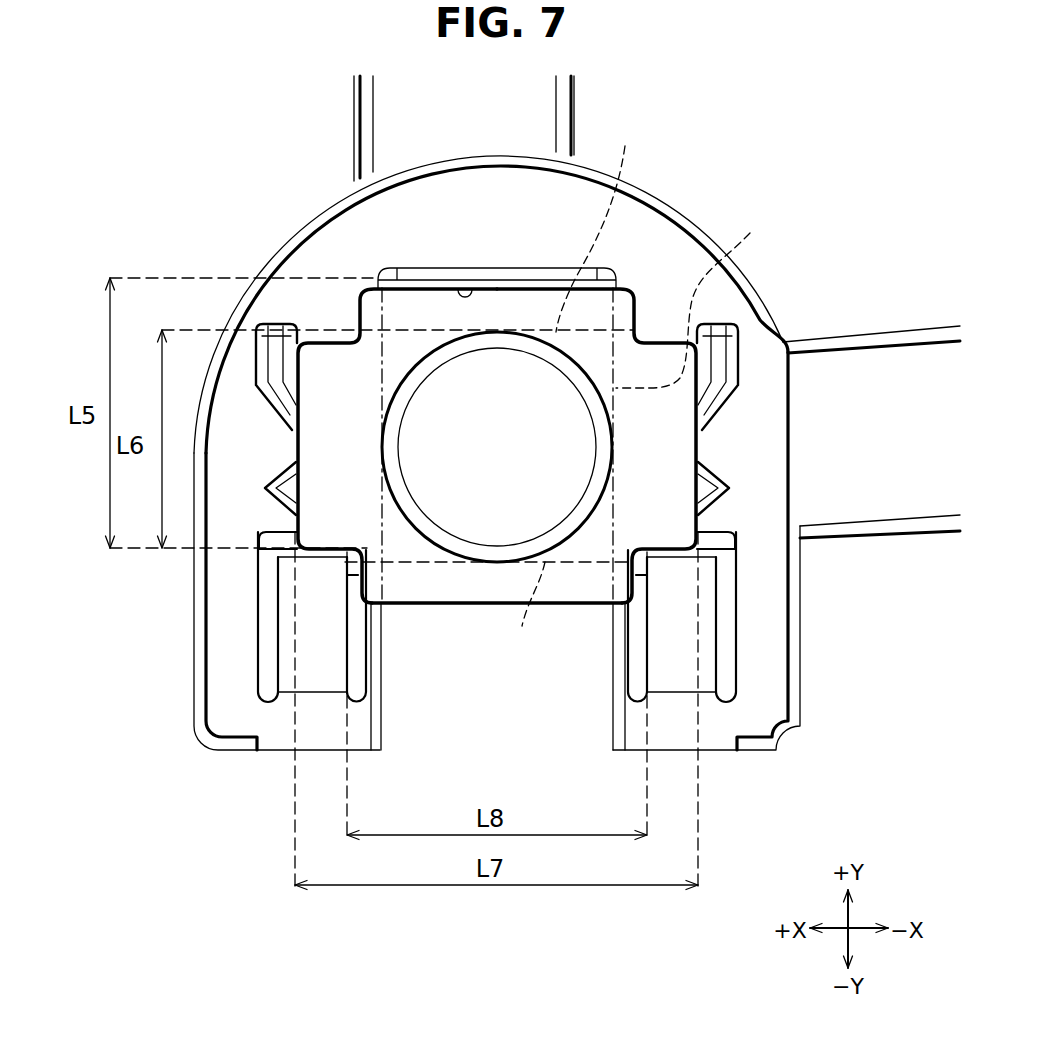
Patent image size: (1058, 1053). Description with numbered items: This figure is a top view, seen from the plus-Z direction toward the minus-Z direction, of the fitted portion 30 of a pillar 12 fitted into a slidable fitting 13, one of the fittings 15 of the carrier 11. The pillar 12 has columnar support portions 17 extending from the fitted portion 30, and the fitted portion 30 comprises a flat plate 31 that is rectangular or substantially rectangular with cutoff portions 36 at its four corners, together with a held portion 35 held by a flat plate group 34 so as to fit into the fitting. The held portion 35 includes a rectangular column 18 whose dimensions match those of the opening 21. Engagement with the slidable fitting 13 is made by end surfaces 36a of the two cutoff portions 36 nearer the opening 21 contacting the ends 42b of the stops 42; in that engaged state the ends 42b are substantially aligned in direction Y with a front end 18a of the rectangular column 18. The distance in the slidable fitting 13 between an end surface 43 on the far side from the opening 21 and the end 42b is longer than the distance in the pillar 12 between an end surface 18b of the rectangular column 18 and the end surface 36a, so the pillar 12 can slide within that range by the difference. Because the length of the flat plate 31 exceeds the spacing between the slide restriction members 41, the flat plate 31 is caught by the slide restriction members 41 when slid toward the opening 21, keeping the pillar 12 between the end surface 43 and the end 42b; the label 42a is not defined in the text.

The carrier 11 is at (353, 121).
The pillar 12 is at (727, 440).
The slidable fitting 13 is at (545, 304).
The fitting 15 is at (783, 268).
The support portion 17 is at (560, 346).
The rectangular column 18 is at (690, 296).
The front end 18a is at (529, 611).
The end surface 18b is at (606, 223).
The opening 21 is at (452, 752).
The fitted portion 30 is at (536, 284).
The flat plate 31 is at (488, 500).
The flat plate group 34 is at (599, 587).
The held portion 35 is at (437, 617).
The cutoff portion 36 is at (343, 327).
The end surface 36a is at (322, 557).
The slide restriction member 41 is at (499, 617).
The stop 42 is at (499, 617).
The inner pad portion 42a is at (310, 645).
The end 42b is at (262, 545).
The end surface 43 is at (473, 270).